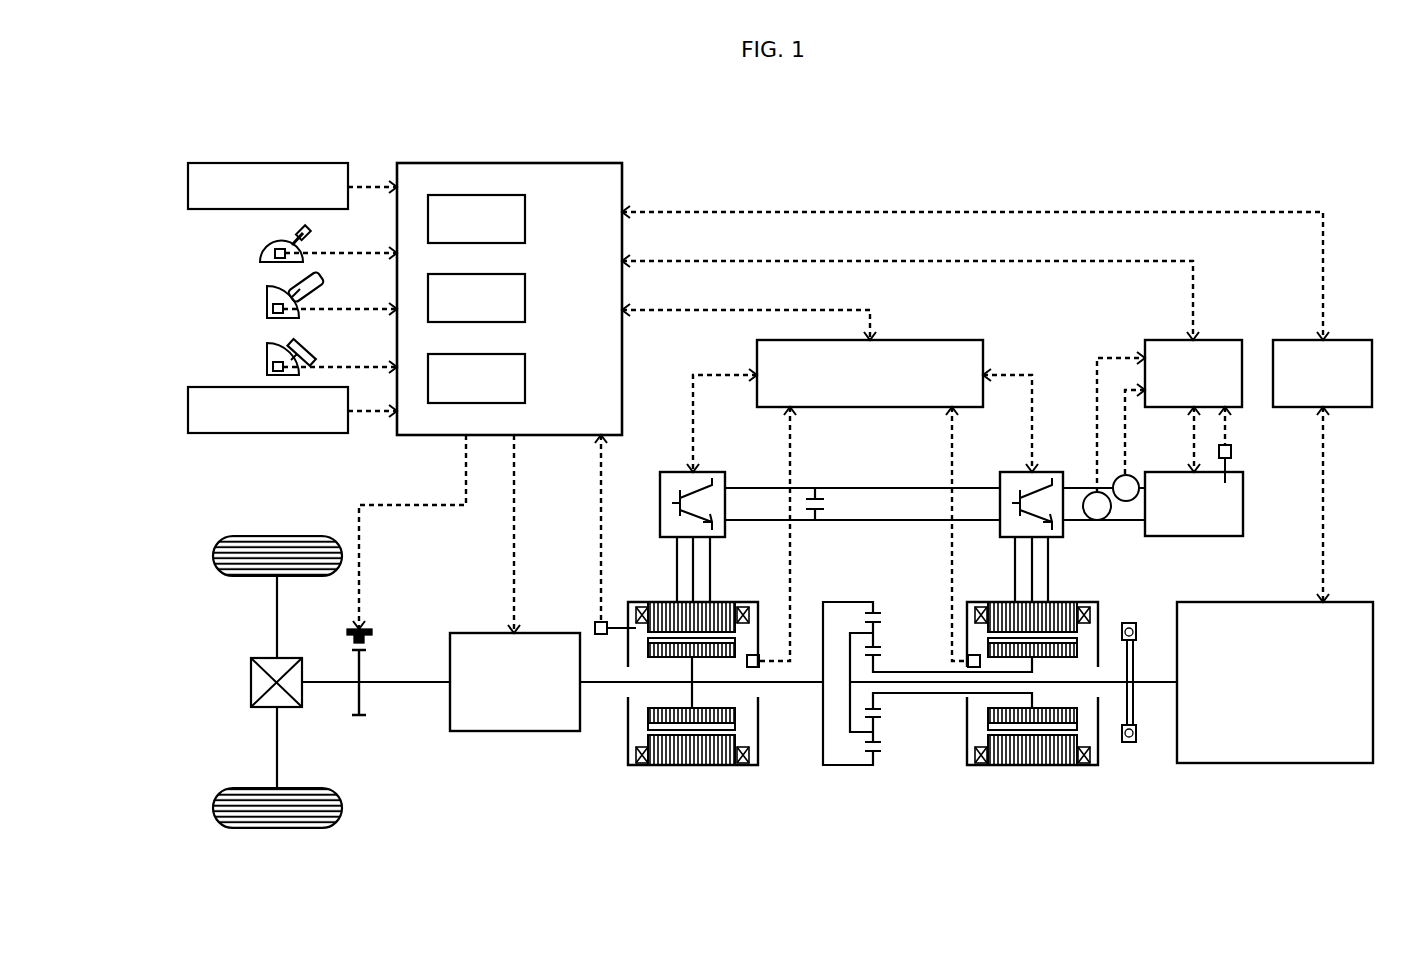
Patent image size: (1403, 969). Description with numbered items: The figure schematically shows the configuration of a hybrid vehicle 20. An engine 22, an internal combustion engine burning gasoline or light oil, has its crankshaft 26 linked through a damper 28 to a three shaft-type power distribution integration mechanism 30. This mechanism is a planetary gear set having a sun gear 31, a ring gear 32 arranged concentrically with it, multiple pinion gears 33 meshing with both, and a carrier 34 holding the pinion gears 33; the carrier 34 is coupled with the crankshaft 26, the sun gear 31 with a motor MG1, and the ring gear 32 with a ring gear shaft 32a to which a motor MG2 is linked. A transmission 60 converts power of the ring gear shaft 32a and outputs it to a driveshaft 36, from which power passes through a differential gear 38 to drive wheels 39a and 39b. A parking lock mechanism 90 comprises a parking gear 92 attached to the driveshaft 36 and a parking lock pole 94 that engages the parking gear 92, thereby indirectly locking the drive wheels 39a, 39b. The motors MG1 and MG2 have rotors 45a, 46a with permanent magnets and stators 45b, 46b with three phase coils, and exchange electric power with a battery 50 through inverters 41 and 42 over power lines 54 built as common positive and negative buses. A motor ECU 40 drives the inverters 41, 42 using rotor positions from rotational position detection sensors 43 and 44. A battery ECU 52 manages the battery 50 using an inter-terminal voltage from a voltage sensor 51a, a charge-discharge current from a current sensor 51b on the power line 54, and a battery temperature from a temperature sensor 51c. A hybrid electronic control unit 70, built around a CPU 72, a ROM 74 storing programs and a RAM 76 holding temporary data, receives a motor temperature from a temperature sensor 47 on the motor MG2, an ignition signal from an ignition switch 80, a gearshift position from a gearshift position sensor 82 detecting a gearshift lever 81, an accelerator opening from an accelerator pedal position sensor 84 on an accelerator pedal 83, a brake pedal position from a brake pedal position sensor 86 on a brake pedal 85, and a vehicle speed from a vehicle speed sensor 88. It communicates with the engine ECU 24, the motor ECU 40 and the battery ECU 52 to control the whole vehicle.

The hybrid vehicle 20 is at (1110, 160).
The engine 22 is at (1275, 763).
The engine ECU 24 is at (1355, 340).
The crankshaft 26 is at (1160, 685).
The damper 28 is at (1130, 742).
The power distribution integration mechanism 30 is at (927, 648).
The sun gear 31 is at (880, 658).
The ring gear 32 is at (880, 613).
The ring gear shaft 32a is at (798, 688).
The pinion gears 33 is at (880, 636).
The carrier 34 is at (850, 633).
The driveshaft 36 is at (423, 684).
The differential gear 38 is at (251, 693).
The drive wheel 39a is at (277, 536).
The drive wheel 39b is at (277, 828).
The motor ECU 40 is at (905, 340).
The inverter 41 is at (1049, 472).
The inverter 42 is at (707, 472).
The rotational position detection sensor 43 is at (972, 655).
The rotational position detection sensor 44 is at (752, 655).
The rotor 45a is at (988, 712).
The stator 45b is at (988, 738).
The rotor 46a is at (650, 710).
The stator 46b is at (650, 738).
The temperature sensor 47 is at (601, 636).
The battery 50 is at (1195, 536).
The voltage sensor 51a is at (1097, 520).
The current sensor 51b is at (1128, 501).
The temperature sensor 51c is at (1233, 452).
The battery ECU 52 is at (1225, 340).
The power lines 54 is at (855, 520).
The transmission 60 is at (515, 731).
The hybrid electronic control unit 70 is at (508, 163).
The CPU 72 is at (526, 217).
The ROM 74 is at (526, 297).
The RAM 76 is at (526, 378).
The ignition switch 80 is at (188, 186).
The gearshift lever 81 is at (294, 243).
The gearshift position sensor 82 is at (275, 253).
The accelerator pedal 83 is at (292, 290).
The accelerator pedal position sensor 84 is at (273, 309).
The brake pedal 85 is at (293, 350).
The brake pedal position sensor 86 is at (273, 368).
The vehicle speed sensor 88 is at (188, 411).
The parking lock mechanism 90 is at (412, 631).
The parking gear 92 is at (362, 667).
The parking lock pole 94 is at (372, 631).
The motor MG1 is at (997, 714).
The motor MG2 is at (655, 714).